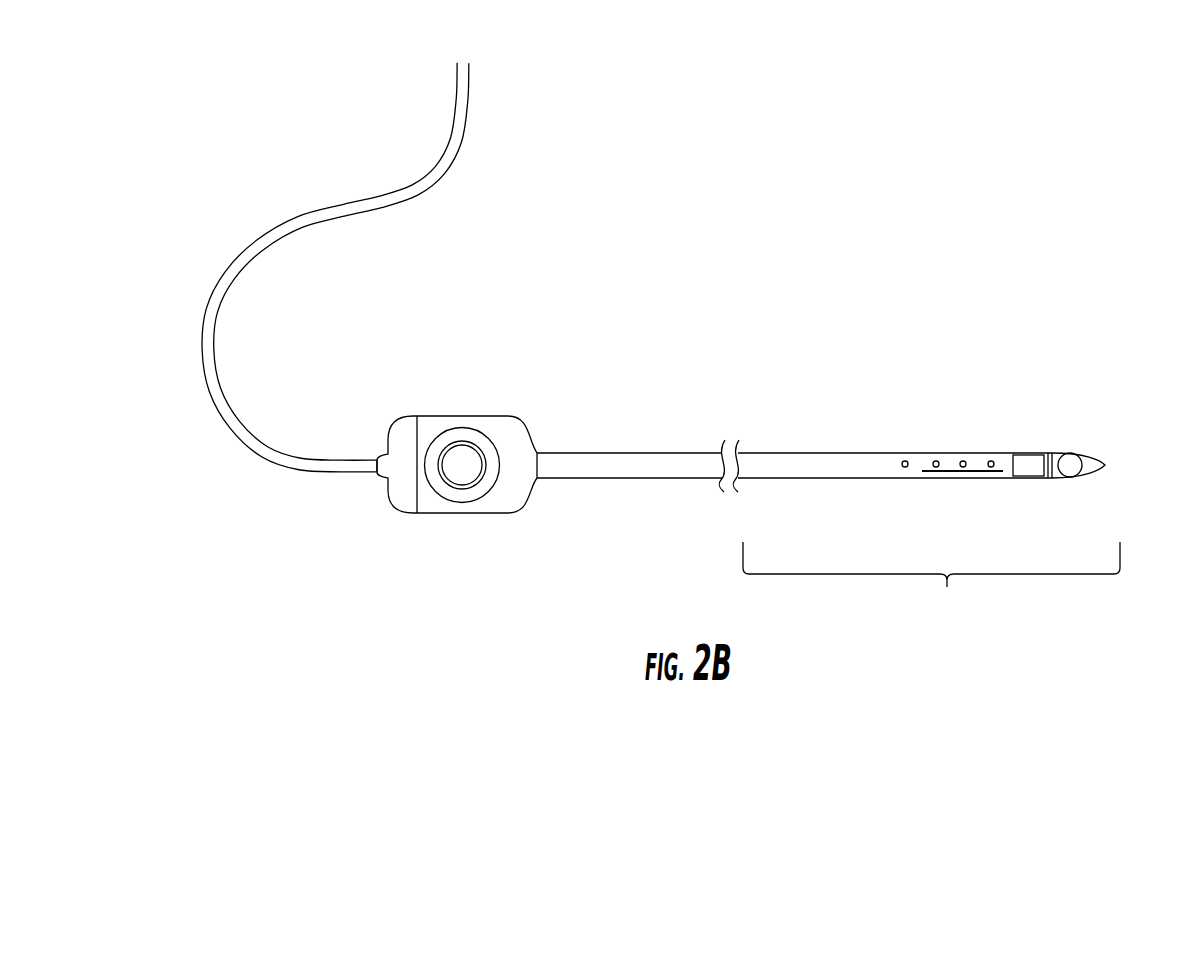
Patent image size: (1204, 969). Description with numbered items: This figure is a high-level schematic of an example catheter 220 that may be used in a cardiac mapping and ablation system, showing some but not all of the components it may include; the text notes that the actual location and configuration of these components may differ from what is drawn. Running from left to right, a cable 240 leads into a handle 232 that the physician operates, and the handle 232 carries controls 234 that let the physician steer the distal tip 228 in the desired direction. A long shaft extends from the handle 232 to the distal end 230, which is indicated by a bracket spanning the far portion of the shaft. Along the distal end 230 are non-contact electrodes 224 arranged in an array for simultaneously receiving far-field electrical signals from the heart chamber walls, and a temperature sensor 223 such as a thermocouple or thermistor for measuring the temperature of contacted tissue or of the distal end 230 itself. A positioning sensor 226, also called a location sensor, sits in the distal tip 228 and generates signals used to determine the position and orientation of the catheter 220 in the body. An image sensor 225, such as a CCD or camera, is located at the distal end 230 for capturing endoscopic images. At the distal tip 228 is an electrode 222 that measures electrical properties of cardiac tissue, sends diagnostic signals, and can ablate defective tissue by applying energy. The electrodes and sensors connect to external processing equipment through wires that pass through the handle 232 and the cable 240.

The catheter 220 is at (905, 187).
The electrode 222 is at (1071, 478).
The temperature sensor 223 is at (969, 473).
The non-contact electrodes 224 is at (905, 460).
The image sensor 225 is at (1072, 453).
The positioning sensor 226 is at (1032, 455).
The distal tip 228 is at (1105, 464).
The distal end 230 is at (931, 583).
The handle 232 is at (472, 513).
The controls 234 is at (469, 416).
The cable 240 is at (393, 202).